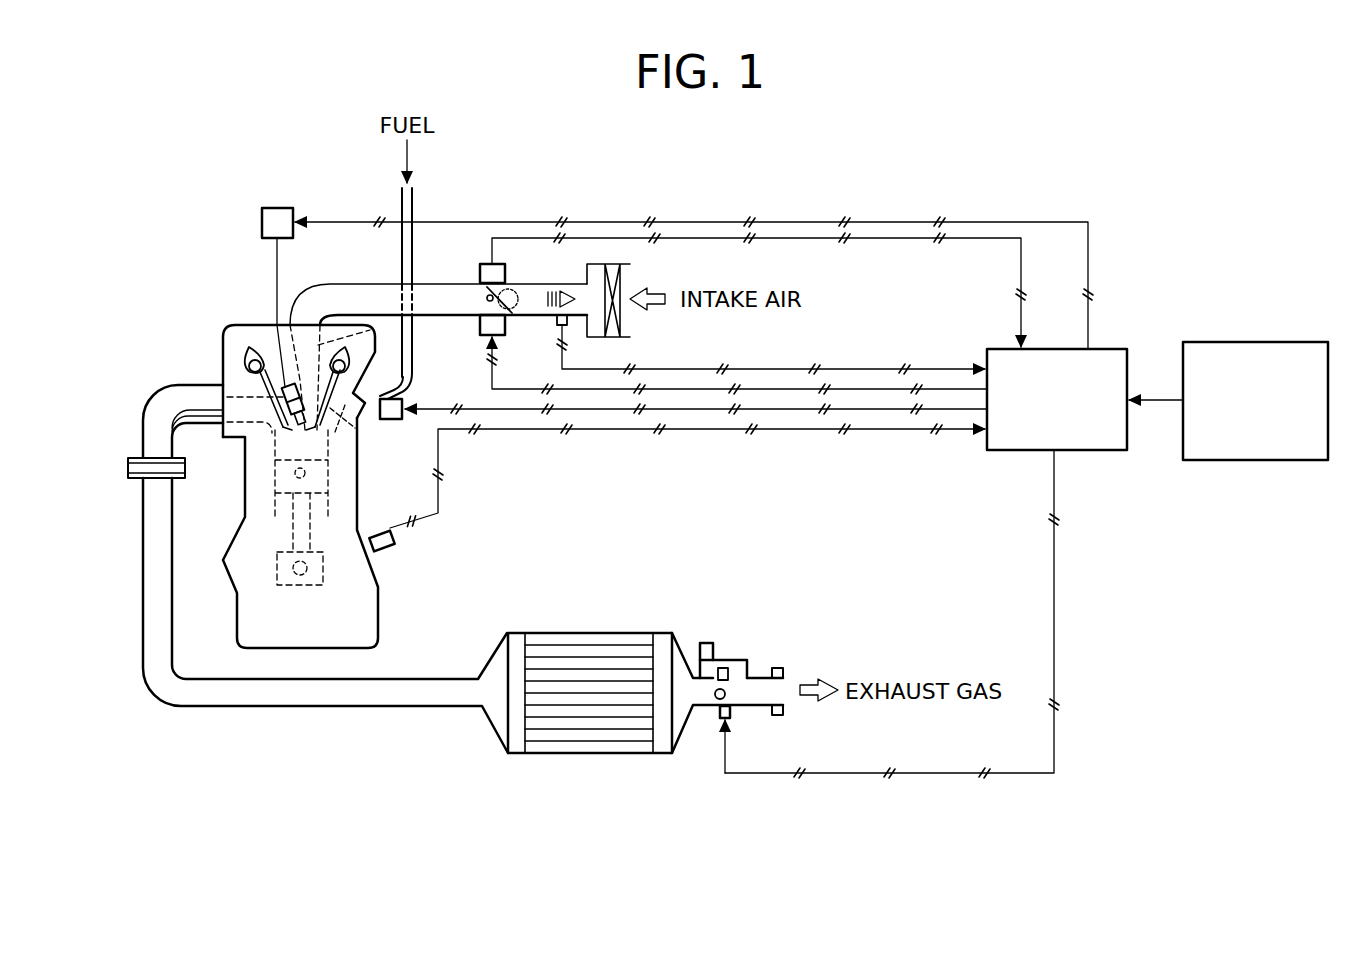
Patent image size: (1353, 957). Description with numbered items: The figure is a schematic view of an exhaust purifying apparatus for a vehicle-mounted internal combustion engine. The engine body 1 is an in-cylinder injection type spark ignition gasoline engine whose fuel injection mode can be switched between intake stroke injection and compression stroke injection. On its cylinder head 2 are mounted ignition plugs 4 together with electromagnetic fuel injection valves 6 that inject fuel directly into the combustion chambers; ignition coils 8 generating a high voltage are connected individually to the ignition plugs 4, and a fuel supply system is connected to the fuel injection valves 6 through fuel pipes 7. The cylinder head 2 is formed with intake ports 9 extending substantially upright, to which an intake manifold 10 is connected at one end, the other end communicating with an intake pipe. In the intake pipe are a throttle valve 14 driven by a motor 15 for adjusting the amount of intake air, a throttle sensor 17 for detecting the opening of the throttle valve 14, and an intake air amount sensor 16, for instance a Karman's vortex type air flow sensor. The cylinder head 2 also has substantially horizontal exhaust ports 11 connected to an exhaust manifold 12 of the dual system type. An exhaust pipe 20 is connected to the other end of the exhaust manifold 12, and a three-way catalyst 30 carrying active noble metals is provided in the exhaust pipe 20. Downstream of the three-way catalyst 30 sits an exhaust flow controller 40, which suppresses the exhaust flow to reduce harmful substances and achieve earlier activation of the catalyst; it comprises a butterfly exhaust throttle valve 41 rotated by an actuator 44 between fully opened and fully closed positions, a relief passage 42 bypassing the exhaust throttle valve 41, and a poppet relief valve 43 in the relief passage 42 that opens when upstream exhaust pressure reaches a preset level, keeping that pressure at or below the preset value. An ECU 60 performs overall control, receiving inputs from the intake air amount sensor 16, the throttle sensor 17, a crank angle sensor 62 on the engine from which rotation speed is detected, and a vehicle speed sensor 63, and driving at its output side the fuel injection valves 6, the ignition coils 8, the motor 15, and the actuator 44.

The engine body 1 is at (268, 447).
The cylinder head 2 is at (253, 325).
The ignition plug 4 is at (285, 400).
The fuel injection valve 6 is at (390, 421).
The fuel pipe 7 is at (414, 200).
The ignition coil 8 is at (275, 208).
The intake port 9 is at (370, 328).
The intake manifold 10 is at (358, 284).
The exhaust port 11 is at (252, 437).
The exhaust manifold 12 is at (157, 385).
The throttle valve 14 is at (487, 297).
The motor 15 is at (480, 327).
The intake air amount sensor 16 is at (558, 326).
The throttle sensor 17 is at (483, 266).
The exhaust pipe 20 is at (331, 708).
The three-way catalyst 30 is at (586, 631).
The exhaust flow controller 40 is at (847, 622).
The exhaust throttle valve 41 is at (730, 690).
The relief passage 42 is at (735, 660).
The relief valve 43 is at (692, 646).
The actuator 44 is at (718, 720).
The ECU 60 is at (1100, 349).
The crank angle sensor 62 is at (384, 548).
The vehicle speed sensor 63 is at (1295, 342).